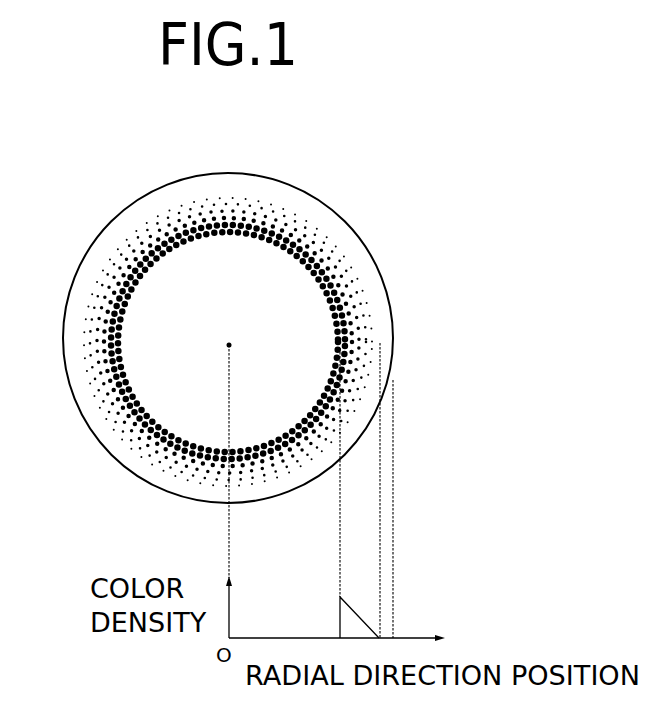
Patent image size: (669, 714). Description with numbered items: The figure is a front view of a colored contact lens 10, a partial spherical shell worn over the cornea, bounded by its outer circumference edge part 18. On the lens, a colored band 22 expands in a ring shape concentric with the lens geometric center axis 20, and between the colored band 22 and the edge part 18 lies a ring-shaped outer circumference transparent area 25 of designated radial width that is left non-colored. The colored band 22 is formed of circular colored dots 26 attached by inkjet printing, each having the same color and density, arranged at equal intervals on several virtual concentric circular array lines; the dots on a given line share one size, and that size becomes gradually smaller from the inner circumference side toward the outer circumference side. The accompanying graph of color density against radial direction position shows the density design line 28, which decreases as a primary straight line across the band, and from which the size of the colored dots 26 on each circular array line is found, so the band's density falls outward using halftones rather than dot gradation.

The colored contact lens 10 is at (377, 240).
The edge part 18 is at (73, 280).
The lens geometric center axis 20 is at (229, 345).
The colored band 22 is at (270, 197).
The outer circumference transparent area 25 is at (381, 342).
The colored dots 26 is at (148, 222).
The density design line 28 is at (363, 605).